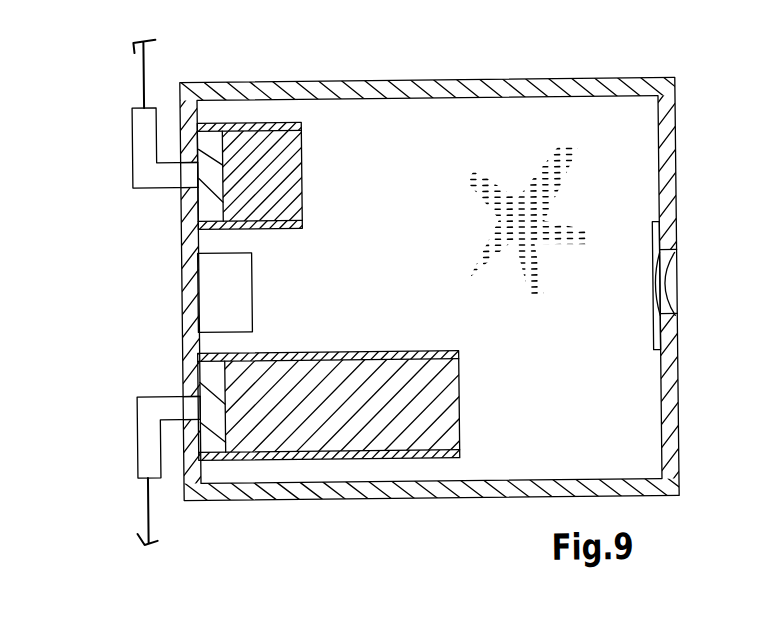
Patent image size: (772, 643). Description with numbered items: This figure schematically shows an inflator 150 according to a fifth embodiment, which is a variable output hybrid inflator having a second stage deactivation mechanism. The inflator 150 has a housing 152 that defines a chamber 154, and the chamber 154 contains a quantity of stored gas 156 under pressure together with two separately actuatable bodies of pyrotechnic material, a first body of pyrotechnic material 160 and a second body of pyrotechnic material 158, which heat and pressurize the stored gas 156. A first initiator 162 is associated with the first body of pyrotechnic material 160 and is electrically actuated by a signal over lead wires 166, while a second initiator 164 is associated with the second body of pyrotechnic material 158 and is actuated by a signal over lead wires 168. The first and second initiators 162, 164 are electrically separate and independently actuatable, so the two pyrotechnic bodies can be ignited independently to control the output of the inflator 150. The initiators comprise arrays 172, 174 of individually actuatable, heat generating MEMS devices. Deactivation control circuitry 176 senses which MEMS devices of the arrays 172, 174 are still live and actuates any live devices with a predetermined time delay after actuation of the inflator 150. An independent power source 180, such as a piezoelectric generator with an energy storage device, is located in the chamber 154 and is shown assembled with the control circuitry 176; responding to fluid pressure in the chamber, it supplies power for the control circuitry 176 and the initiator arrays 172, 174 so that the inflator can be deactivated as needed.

The inflator 150 is at (216, 532).
The housing 152 is at (439, 85).
The chamber 154 is at (471, 145).
The stored gas 156 is at (531, 206).
The second body of pyrotechnic material 158 is at (407, 400).
The first body of pyrotechnic material 160 is at (273, 178).
The first initiator 162 is at (212, 141).
The second initiator 164 is at (214, 383).
The lead wires 166 is at (142, 65).
The lead wires 168 is at (150, 500).
The array of MEMS devices 172 is at (199, 201).
The array of MEMS devices 174 is at (198, 407).
The deactivation control circuitry 176 is at (223, 270).
The independent power source 180 is at (225, 296).